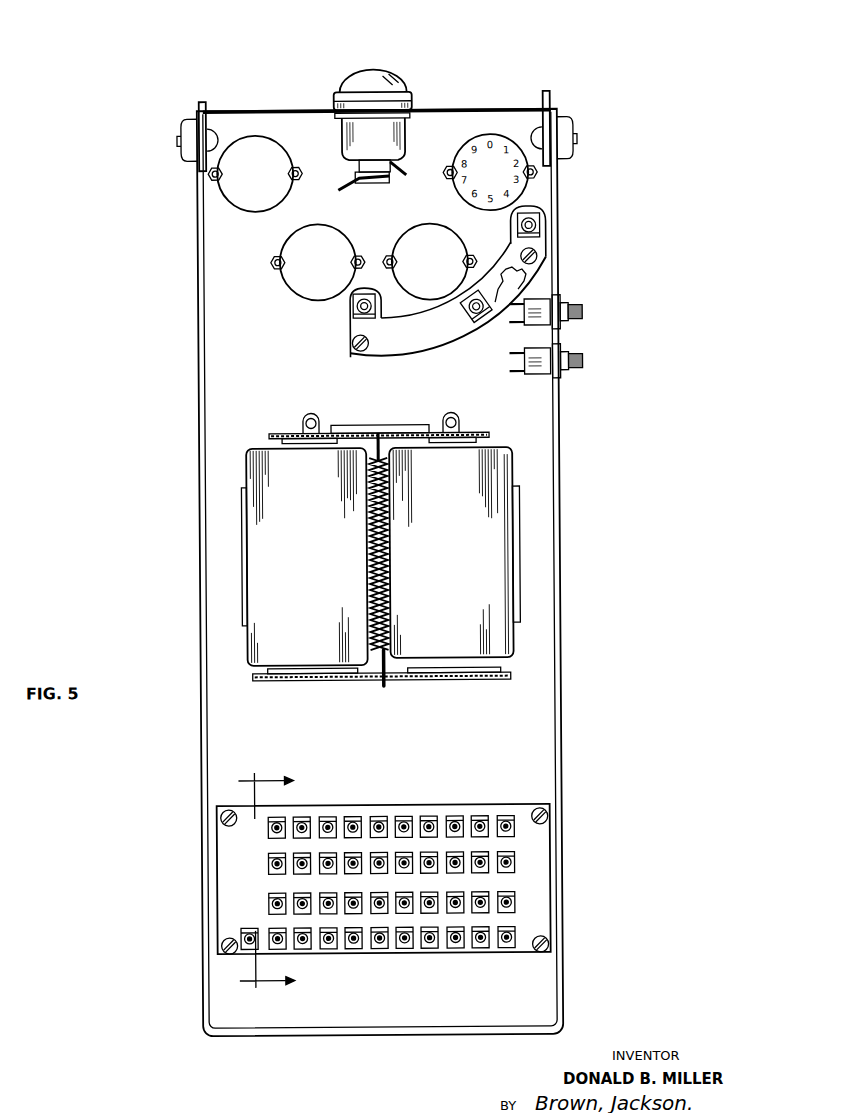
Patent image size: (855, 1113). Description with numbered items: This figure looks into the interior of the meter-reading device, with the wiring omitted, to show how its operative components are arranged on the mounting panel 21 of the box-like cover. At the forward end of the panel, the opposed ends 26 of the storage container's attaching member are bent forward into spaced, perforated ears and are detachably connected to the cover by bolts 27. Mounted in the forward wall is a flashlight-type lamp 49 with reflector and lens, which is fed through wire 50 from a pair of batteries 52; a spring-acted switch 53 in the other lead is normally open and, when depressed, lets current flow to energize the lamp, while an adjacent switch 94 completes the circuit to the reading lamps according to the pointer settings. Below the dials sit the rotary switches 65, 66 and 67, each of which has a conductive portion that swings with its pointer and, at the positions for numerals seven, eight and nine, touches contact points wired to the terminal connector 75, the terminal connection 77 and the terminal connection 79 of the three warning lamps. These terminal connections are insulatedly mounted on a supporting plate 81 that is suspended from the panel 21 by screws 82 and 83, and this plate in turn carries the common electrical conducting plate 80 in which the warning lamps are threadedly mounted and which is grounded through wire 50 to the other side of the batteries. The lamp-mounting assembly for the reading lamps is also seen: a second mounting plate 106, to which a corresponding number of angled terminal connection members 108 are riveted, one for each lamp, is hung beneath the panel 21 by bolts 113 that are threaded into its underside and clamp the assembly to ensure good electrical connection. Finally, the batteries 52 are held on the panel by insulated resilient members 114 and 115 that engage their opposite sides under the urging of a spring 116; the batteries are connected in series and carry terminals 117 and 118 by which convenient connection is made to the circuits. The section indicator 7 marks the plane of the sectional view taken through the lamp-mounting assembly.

The mounting panel 21 is at (537, 718).
The opposed ends 26 is at (205, 102).
The bolts 27 is at (186, 135).
The lamp 49 is at (370, 72).
The wire 50 is at (340, 192).
The switch 65 is at (244, 212).
The switch 66 is at (297, 294).
The switch 67 is at (428, 226).
The terminal connector 75 is at (356, 312).
The terminal connection 77 is at (480, 323).
The terminal connection 79 is at (520, 223).
The electrical conducting plate 80 is at (528, 287).
The supporting plate 81 is at (405, 356).
The screw 82 is at (540, 257).
The screw 83 is at (353, 343).
The switch 53 is at (581, 306).
The switch 94 is at (581, 352).
The batteries 52 is at (508, 448).
The resilient member 114 is at (270, 434).
The resilient member 115 is at (268, 683).
The spring 116 is at (391, 686).
The terminal 117 is at (308, 413).
The terminal 118 is at (448, 413).
The second mounting plate 106 is at (427, 805).
The angled terminal connection members 108 is at (400, 817).
The bolts 113 is at (533, 810).
The section line 7 is at (260, 882).